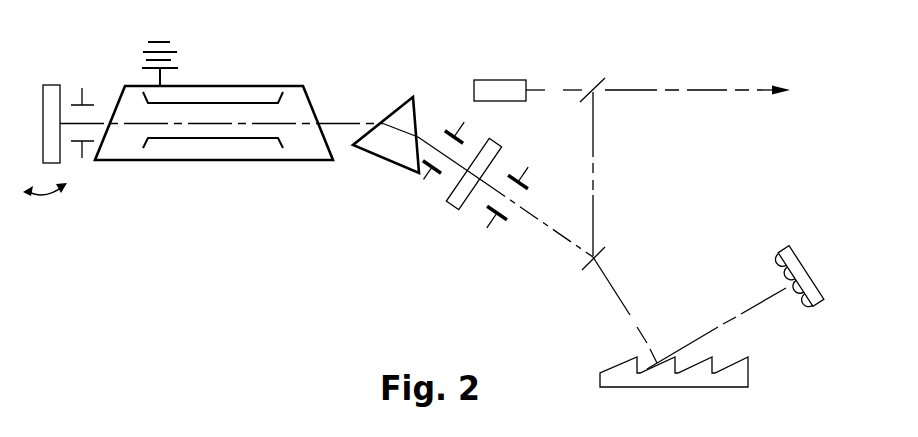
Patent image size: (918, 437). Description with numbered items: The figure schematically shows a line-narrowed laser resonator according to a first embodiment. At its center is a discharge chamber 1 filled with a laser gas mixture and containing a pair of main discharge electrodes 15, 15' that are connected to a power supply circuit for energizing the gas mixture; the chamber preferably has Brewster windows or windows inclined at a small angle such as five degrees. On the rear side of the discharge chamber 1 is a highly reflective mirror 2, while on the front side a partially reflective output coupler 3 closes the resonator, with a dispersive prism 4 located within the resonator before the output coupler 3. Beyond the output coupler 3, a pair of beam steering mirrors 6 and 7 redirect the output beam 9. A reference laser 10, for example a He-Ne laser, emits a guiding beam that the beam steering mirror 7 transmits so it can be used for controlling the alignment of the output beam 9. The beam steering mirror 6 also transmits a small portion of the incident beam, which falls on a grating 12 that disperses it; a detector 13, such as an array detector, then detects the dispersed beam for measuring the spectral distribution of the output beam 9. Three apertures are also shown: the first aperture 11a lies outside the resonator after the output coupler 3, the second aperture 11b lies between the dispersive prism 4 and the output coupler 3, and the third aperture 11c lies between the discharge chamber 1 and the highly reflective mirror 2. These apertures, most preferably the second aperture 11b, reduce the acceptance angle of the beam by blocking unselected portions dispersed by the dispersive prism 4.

The discharge chamber 1 is at (316, 156).
The highly reflective mirror 2 is at (50, 83).
The partially reflective output coupler 3 is at (455, 208).
The dispersive prism 4 is at (400, 105).
The beam steering mirror 6 is at (606, 250).
The beam steering mirror 7 is at (600, 78).
The output beam 9 is at (697, 107).
The reference laser 10 is at (503, 80).
The first aperture 11a is at (486, 230).
The second aperture 11b is at (427, 182).
The third aperture 11c is at (84, 150).
The grating 12 is at (712, 388).
The detector 13 is at (818, 308).
The main discharge electrode 15 is at (213, 168).
The main discharge electrode 15' is at (254, 104).